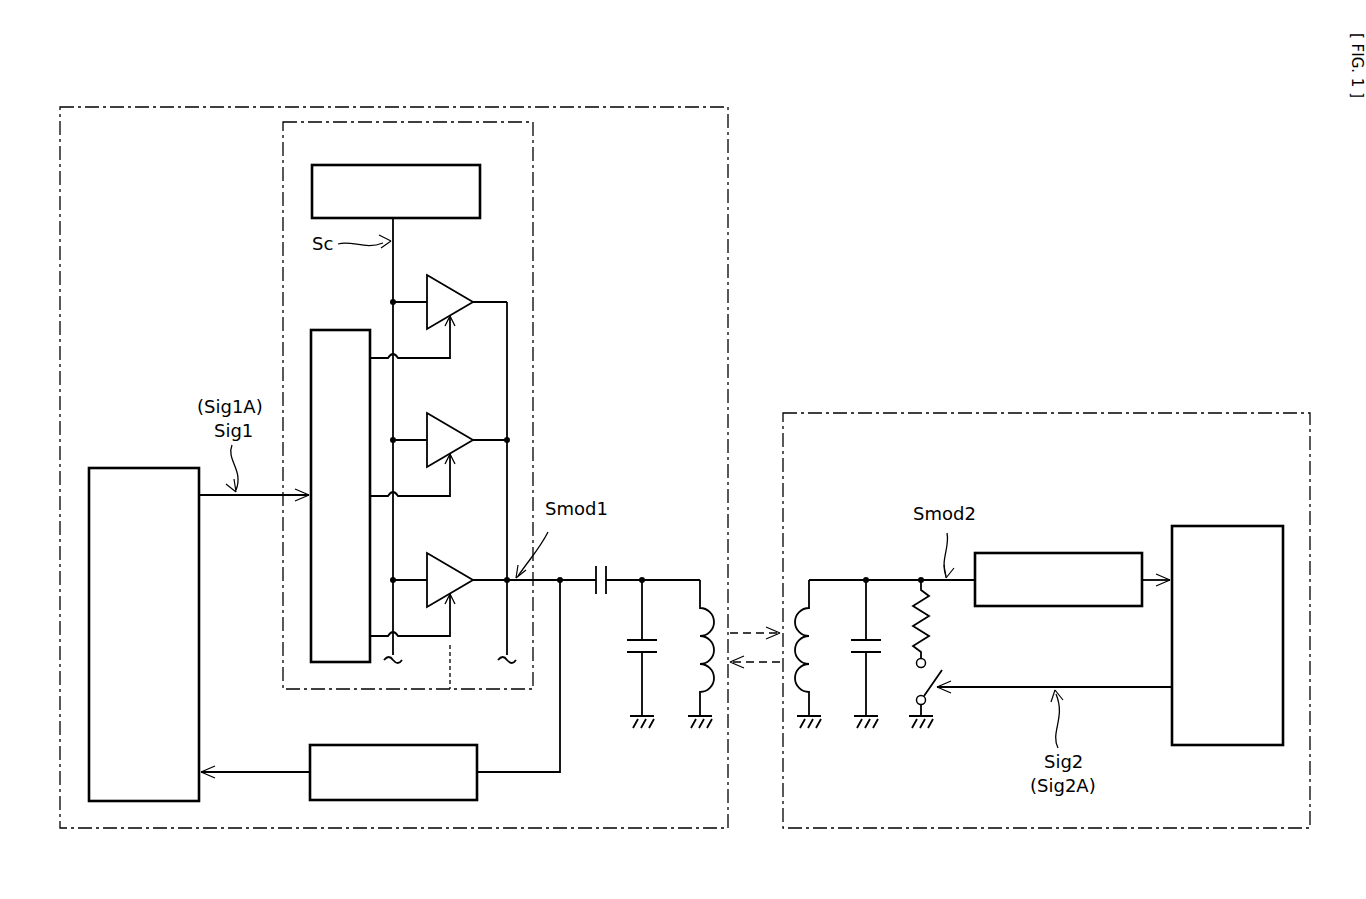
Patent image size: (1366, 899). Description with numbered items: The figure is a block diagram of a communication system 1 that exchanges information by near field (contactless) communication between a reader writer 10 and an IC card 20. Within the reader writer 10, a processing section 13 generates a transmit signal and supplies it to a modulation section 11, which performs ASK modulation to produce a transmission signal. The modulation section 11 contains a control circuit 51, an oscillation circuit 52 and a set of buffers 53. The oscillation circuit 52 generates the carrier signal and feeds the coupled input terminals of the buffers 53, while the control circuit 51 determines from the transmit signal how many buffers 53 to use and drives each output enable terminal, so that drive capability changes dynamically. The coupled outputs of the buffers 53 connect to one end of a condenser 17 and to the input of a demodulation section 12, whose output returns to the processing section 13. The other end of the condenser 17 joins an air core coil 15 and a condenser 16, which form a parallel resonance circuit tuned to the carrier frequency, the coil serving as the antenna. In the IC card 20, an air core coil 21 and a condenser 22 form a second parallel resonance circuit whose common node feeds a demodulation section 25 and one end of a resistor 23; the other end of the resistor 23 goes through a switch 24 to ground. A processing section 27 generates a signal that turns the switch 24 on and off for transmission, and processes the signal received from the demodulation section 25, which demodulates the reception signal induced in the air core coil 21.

The communication system 1 is at (942, 214).
The reader writer 10 is at (370, 107).
The modulation section 11 is at (535, 193).
The demodulation section 12 is at (398, 745).
The processing section 13 is at (142, 468).
The air core coil 15 is at (690, 668).
The condenser 16 is at (626, 656).
The condenser 17 is at (609, 594).
The IC card 20 is at (950, 413).
The air core coil 21 is at (812, 672).
The condenser 22 is at (856, 643).
The resistor 23 is at (914, 643).
The switch 24 is at (948, 681).
The demodulation section 25 is at (1030, 553).
The processing section 27 is at (1225, 526).
The control circuit 51 is at (340, 330).
The oscillation circuit 52 is at (428, 165).
The buffer 53 is at (458, 274).